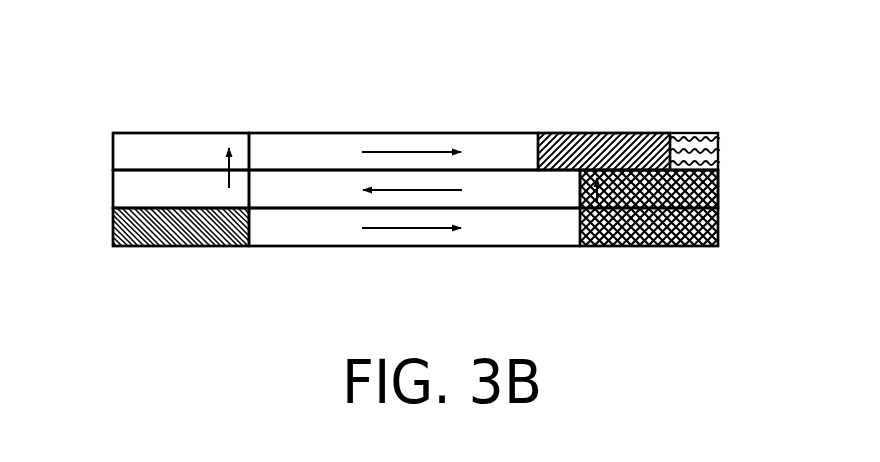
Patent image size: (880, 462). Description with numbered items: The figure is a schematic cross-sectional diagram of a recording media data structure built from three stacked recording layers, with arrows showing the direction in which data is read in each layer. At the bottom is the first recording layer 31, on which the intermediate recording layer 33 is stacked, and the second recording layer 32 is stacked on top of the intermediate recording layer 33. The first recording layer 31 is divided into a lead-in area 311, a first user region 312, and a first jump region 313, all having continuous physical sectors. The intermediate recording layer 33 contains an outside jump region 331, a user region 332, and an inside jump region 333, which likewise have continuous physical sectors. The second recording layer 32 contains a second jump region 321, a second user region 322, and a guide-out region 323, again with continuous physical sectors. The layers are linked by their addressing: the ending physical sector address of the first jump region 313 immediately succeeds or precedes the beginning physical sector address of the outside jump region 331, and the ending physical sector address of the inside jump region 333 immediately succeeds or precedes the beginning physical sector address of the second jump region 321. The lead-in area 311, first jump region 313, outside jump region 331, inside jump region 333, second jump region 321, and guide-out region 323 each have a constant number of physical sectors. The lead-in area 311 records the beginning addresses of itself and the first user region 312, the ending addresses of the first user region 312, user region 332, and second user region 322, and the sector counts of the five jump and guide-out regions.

The first recording layer 31 is at (123, 235).
The second recording layer 32 is at (125, 153).
The intermediate recording layer 33 is at (123, 193).
The lead-in area 311 is at (173, 237).
The first user region 312 is at (338, 236).
The first jump region 313 is at (620, 247).
The second jump region 321 is at (148, 150).
The second user region 322 is at (325, 147).
The guide-out region 323 is at (577, 150).
The outside jump region 331 is at (718, 177).
The user region 332 is at (493, 188).
The inside jump region 333 is at (165, 192).